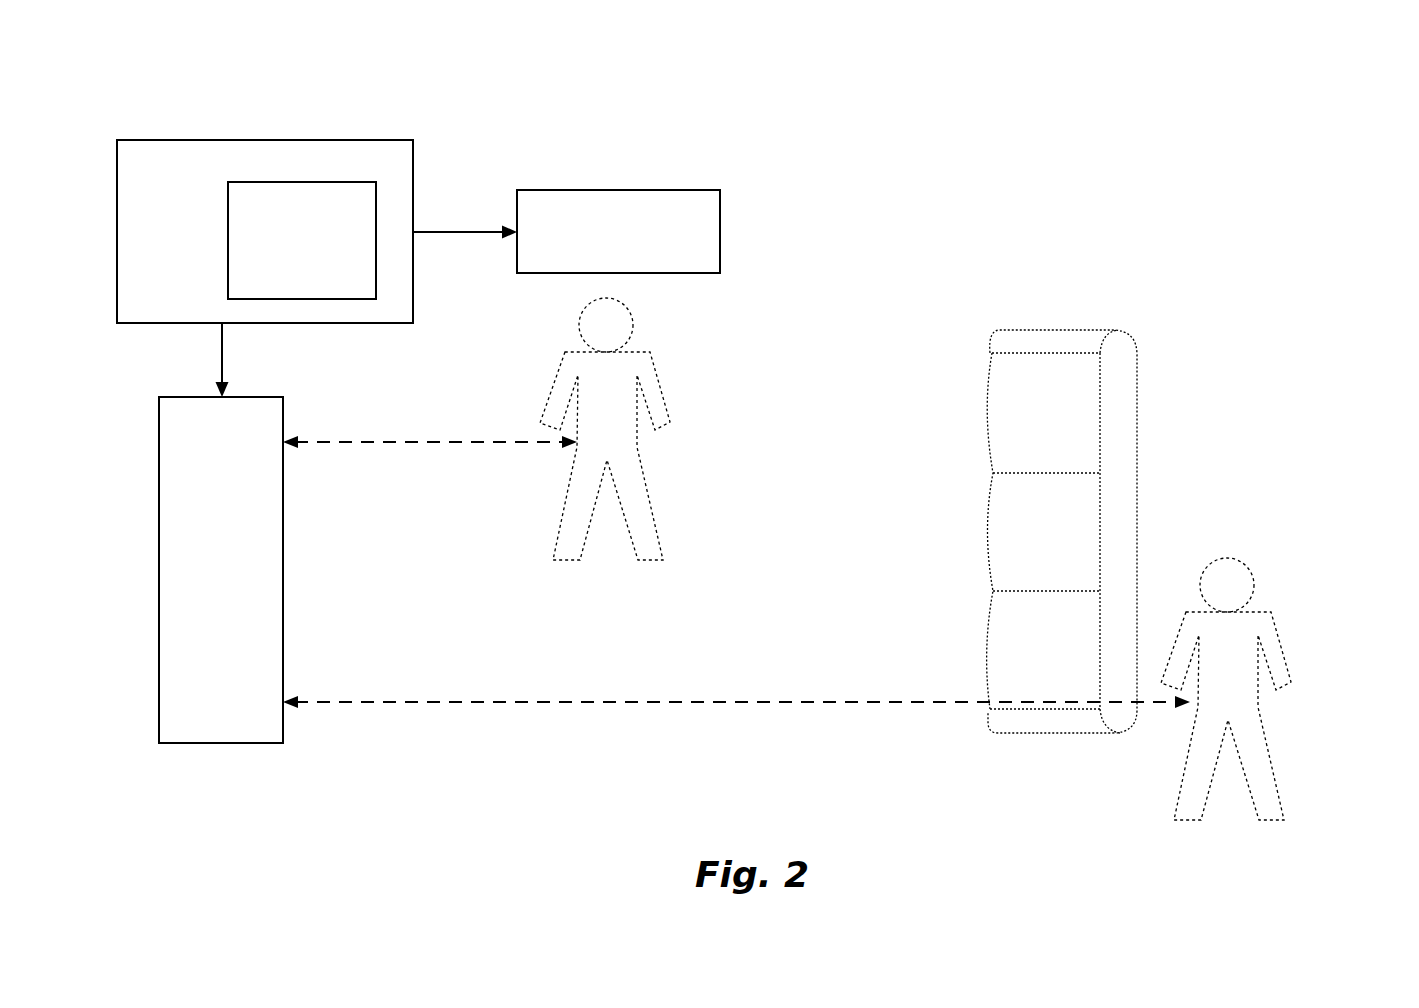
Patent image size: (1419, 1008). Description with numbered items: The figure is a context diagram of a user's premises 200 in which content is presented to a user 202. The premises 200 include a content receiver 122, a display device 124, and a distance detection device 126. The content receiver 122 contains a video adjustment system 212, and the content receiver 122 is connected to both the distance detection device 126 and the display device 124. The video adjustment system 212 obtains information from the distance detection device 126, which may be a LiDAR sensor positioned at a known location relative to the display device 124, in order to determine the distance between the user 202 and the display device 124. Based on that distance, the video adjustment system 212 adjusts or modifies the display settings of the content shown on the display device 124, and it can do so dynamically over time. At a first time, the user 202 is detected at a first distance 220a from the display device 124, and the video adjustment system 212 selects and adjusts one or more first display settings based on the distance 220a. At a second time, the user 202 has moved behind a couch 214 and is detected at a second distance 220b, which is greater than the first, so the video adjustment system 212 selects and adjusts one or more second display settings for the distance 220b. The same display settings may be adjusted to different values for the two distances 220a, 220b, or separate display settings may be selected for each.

The user's premises 200 is at (1316, 61).
The content receiver 122 is at (160, 140).
The video adjustment system 212 is at (228, 238).
The distance detection device 126 is at (618, 190).
The display device 124 is at (175, 745).
The user 202 is at (657, 367).
The distance 220a is at (420, 441).
The distance 220b is at (775, 701).
The couch 214 is at (1135, 427).